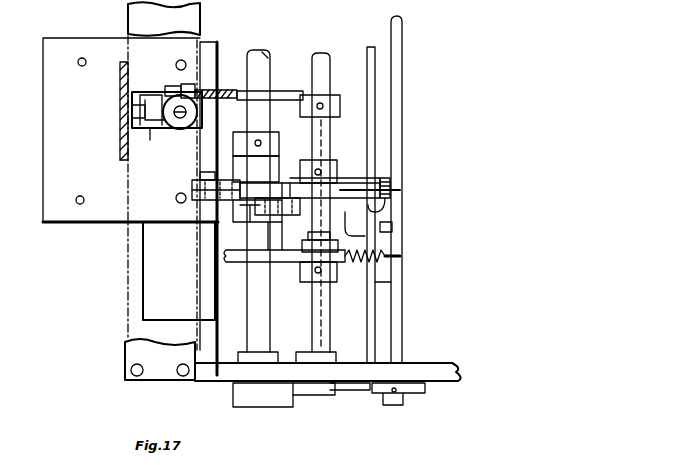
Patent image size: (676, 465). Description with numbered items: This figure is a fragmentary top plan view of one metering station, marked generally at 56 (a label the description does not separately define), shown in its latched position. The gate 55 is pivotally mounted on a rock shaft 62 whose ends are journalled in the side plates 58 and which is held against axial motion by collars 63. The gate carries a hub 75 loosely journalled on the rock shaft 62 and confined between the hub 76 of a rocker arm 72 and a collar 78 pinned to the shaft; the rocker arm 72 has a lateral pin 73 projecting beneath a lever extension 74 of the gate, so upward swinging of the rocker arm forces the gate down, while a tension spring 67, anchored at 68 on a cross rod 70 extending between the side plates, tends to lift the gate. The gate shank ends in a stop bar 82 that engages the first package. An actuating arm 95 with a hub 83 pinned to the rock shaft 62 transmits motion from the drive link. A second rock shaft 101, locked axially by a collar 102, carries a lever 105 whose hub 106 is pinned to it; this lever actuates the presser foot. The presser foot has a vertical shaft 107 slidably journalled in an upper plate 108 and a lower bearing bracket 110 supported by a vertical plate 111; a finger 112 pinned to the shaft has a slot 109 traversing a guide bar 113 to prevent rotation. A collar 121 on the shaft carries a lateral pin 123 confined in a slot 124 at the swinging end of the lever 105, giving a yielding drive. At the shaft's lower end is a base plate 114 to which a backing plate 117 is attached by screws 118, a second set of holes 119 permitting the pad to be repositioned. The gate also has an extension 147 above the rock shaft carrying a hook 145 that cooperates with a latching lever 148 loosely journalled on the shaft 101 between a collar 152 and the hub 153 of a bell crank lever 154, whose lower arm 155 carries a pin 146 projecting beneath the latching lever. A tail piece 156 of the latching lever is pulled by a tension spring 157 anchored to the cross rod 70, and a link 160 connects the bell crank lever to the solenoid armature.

The frame assembly 56 is at (66, 152).
The upper plate 108 is at (136, 16).
The screws 118 is at (204, 42).
The second set of holes 119 is at (78, 63).
The base plate 114 is at (70, 224).
The backing plate 117 is at (148, 312).
The guide bar 113 is at (128, 62).
The vertical plate 111 is at (130, 123).
The vertical shaft 107 is at (158, 92).
The collar 121 is at (181, 130).
The slot 109 is at (160, 126).
The finger 112 is at (158, 146).
The lower bearing bracket 110 is at (152, 84).
The lateral pin 123 is at (187, 75).
The slot 124 is at (198, 83).
The lever 105 is at (286, 91).
The hub 106 is at (334, 95).
The collar 78 is at (240, 140).
The lateral pin 146 is at (276, 172).
The rock shaft 62 is at (247, 332).
The collars 63 is at (240, 356).
The rock shaft 101 is at (328, 335).
The gate 55 is at (380, 140).
The cross rod 70 is at (404, 323).
The stop bar 82 is at (392, 283).
The side plates 58 is at (444, 375).
The hub 83 is at (235, 392).
The actuating arm 95 is at (294, 398).
The collar 102 is at (340, 392).
The lateral pin 73 is at (202, 172).
The lever extension 74 is at (192, 186).
The rocker arm 72 is at (218, 208).
The latching lever 148 is at (298, 200).
The collar 152 is at (330, 166).
The extension 147 is at (312, 148).
The hub 75 is at (286, 178).
The tension spring 67 is at (391, 167).
The anchor 68 is at (402, 190).
The tension spring 157 is at (386, 210).
The tail piece 156 is at (393, 228).
The hub 153 is at (368, 222).
The hook 145 is at (240, 230).
The hub 76 is at (266, 224).
The lower arm 155 is at (290, 232).
The link 160 is at (236, 262).
The bell crank lever 154 is at (390, 248).